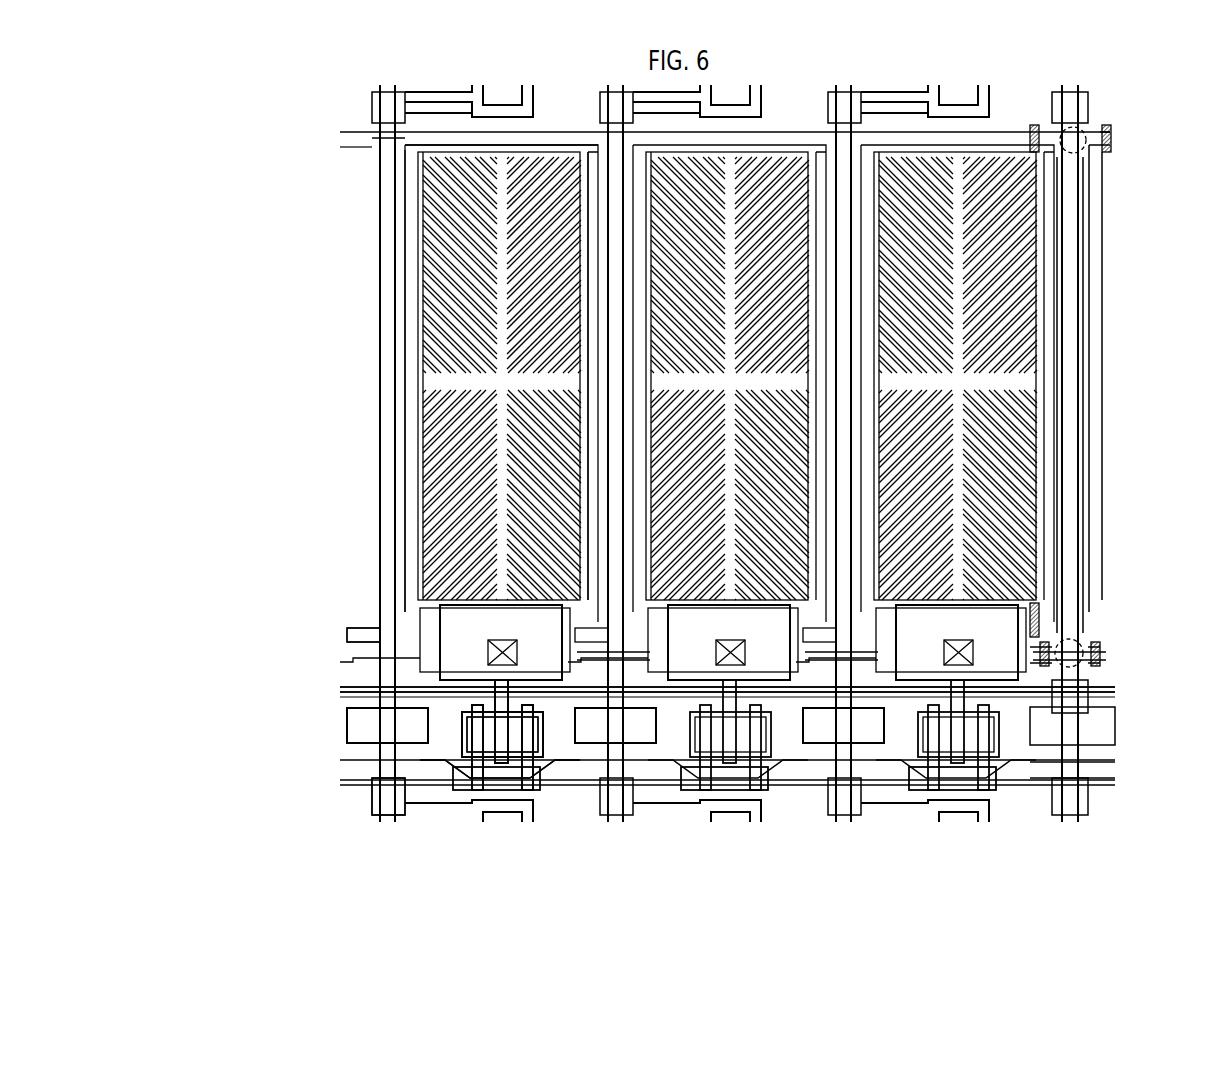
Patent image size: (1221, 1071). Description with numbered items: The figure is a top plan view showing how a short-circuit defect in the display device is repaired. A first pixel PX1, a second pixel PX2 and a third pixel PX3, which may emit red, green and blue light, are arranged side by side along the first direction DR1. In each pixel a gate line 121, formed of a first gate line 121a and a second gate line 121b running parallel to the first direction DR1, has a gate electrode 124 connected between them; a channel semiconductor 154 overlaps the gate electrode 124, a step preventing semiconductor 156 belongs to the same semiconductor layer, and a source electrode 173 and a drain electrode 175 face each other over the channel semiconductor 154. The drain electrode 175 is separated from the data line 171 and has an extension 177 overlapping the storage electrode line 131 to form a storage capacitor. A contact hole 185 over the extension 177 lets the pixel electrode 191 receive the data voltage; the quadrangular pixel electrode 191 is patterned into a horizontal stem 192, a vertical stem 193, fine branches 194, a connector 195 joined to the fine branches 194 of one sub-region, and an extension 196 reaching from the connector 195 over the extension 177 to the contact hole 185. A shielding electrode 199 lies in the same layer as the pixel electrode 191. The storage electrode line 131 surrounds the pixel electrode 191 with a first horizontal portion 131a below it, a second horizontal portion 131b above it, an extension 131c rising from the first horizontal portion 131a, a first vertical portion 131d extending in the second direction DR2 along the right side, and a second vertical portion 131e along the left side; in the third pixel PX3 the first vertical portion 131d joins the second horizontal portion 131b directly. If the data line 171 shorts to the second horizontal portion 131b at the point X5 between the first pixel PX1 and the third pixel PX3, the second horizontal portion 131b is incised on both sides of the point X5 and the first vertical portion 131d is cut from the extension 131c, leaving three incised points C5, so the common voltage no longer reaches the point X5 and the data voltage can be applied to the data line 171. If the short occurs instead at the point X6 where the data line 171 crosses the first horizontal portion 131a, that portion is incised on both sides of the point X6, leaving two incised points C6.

The first pixel PX1 is at (553, 128).
The second pixel PX2 is at (785, 128).
The third pixel PX3 is at (905, 128).
The data line 171 is at (378, 252).
The pixel electrode 191 is at (405, 190).
The fine branches 194 is at (422, 300).
The vertical stem 193 is at (495, 338).
The horizontal stem 192 is at (430, 382).
The contact hole 185 is at (495, 640).
The connector 195 is at (405, 623).
The storage electrode line 131 is at (212, 430).
The first horizontal portion 131a is at (347, 640).
The second horizontal portion 131b is at (372, 147).
The extension 131c is at (440, 603).
The first vertical portion 131d is at (587, 427).
The second vertical portion 131e is at (405, 213).
The gate line 121 is at (280, 690).
The first gate line 121a is at (347, 697).
The second gate line 121b is at (347, 748).
The step preventing semiconductor 156 is at (376, 722).
The channel semiconductor 154 is at (466, 745).
The source electrode 173 is at (478, 765).
The drain electrode 175 is at (508, 770).
The extension 177 is at (548, 700).
The extension 196 is at (575, 640).
The gate electrode 124 is at (578, 762).
The shielding electrode 199 is at (1115, 690).
The incised points C5 is at (1034, 123).
The incised points C6 is at (1102, 654).
The short-circuited point X5 is at (1076, 127).
The short-circuited point X6 is at (1078, 641).
The first direction DR1 is at (195, 815).
The second direction DR2 is at (195, 815).